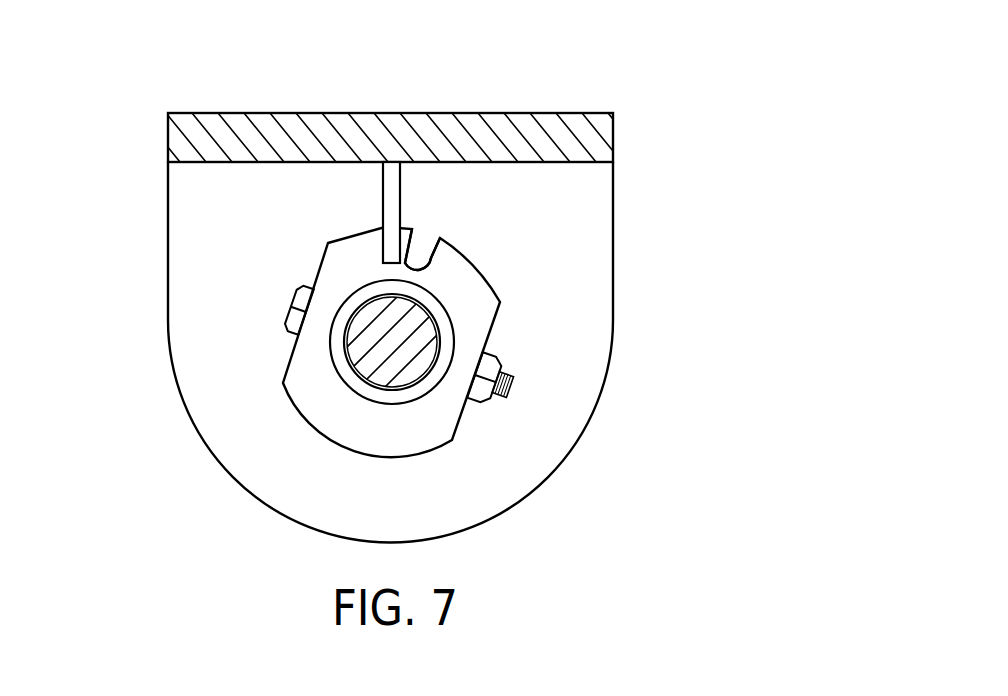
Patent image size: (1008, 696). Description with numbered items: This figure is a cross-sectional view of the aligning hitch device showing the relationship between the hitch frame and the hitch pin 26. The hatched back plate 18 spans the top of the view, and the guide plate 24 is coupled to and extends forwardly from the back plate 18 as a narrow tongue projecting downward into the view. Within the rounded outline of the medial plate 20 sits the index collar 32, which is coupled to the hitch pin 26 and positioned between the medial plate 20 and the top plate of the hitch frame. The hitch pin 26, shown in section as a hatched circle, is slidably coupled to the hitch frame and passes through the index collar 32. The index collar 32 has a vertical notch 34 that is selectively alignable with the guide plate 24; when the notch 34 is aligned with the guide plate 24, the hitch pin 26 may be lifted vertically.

The back plate 18 is at (508, 122).
The medial plate 20 is at (568, 350).
The guide plate 24 is at (393, 197).
The hitch pin 26 is at (358, 340).
The index collar 32 is at (318, 413).
The vertical notch 34 is at (418, 250).